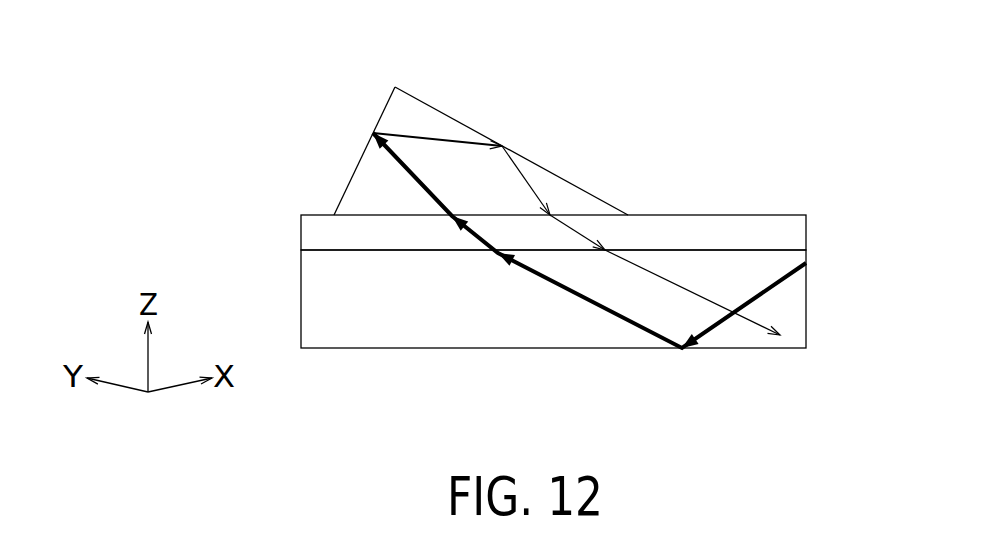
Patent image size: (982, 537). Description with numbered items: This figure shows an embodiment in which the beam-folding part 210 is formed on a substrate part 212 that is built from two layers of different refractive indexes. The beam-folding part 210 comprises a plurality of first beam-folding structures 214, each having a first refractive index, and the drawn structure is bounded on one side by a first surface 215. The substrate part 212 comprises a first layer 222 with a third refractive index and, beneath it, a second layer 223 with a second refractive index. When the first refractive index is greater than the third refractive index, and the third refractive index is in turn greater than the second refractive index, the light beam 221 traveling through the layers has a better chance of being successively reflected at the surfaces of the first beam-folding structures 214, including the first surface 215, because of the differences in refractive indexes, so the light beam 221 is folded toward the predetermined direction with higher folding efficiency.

The beam-folding part 210 is at (591, 108).
The substrate part 212 is at (198, 192).
The first beam-folding structures 214 is at (408, 112).
The first surface 215 is at (357, 167).
The light beam 221 is at (600, 308).
The first layer 222 is at (305, 233).
The second layer 223 is at (305, 277).